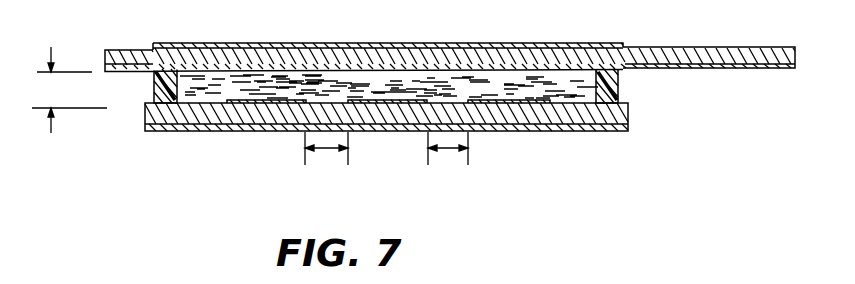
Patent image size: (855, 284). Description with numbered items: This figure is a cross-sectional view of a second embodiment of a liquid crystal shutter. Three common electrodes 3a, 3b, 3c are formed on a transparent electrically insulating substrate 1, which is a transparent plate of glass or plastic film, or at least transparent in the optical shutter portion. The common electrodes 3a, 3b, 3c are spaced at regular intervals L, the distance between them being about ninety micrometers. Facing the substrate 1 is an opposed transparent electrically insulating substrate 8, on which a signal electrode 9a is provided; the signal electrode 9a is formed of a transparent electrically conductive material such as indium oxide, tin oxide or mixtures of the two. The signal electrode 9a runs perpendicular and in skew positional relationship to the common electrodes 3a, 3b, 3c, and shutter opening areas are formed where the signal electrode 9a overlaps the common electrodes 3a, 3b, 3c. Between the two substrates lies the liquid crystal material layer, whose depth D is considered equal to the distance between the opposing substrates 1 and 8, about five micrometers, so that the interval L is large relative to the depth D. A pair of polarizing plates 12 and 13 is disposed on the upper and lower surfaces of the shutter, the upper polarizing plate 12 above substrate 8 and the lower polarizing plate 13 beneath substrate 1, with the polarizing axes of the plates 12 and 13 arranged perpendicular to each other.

The transparent electrically insulating substrate 1 is at (163, 120).
The common electrode 3a is at (257, 104).
The common electrode 3b is at (388, 104).
The common electrode 3c is at (507, 104).
The opposed transparent electrically insulating substrate 8 is at (130, 50).
The signal electrode 9a is at (677, 69).
The polarizing plate 12 is at (578, 45).
The polarizing plate 13 is at (572, 130).
The depth of the liquid crystal material layer D is at (69, 90).
The regular interval between common electrodes L is at (386, 151).